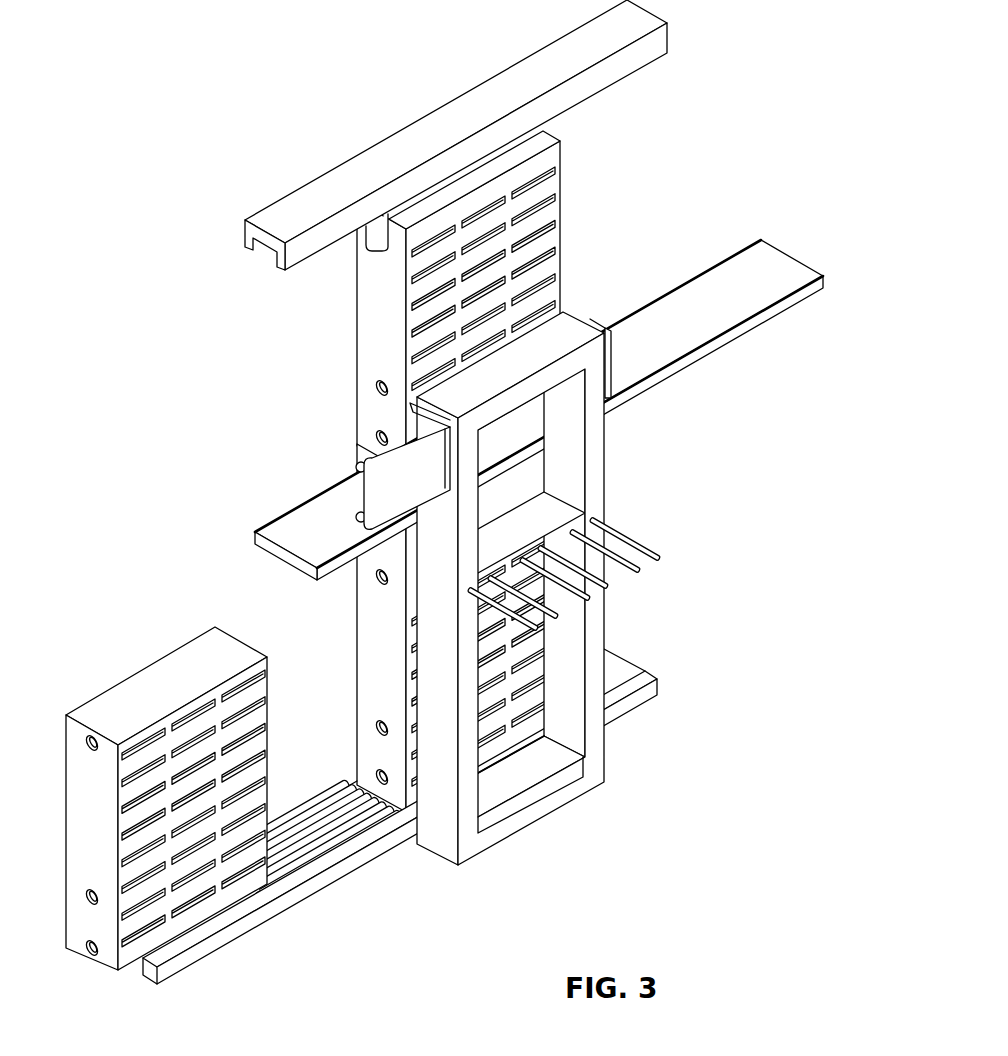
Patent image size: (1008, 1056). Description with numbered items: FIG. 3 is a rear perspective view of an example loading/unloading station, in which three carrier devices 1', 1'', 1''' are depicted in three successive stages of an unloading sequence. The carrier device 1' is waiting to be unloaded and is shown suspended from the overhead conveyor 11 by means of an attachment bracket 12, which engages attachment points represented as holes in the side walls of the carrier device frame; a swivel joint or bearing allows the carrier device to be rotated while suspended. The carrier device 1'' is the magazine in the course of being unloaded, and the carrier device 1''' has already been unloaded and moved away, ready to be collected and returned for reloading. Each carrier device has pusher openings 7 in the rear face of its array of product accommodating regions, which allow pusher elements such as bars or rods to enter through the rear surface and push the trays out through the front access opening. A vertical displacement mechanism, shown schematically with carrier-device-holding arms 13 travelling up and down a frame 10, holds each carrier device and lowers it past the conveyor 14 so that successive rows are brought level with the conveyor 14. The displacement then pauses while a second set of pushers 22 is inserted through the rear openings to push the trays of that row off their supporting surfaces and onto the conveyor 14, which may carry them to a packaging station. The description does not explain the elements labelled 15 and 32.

The carrier device 1' is at (500, 299).
The carrier device 1'' is at (451, 645).
The carrier device 1''' is at (166, 775).
The pusher openings 7 is at (547, 230).
The frame 10 is at (598, 462).
The overhead conveyor 11 is at (440, 128).
The attachment bracket 12 is at (378, 237).
The carrier-device-holding arms 13 is at (382, 497).
The conveyor 14 is at (737, 308).
The bottom channel 15 is at (300, 848).
The second set of pushers 22 is at (642, 548).
The top rail 32 is at (464, 174).